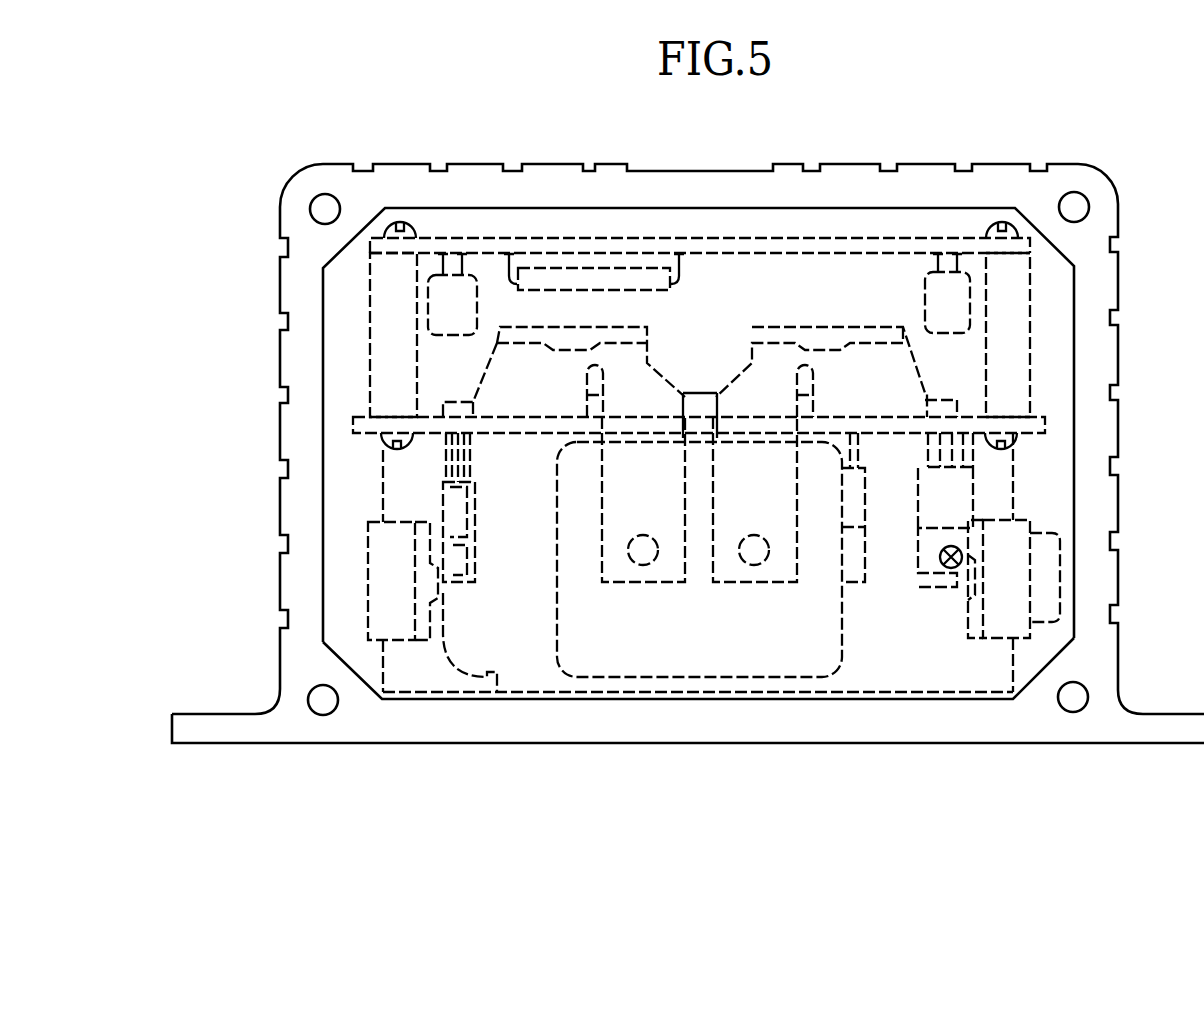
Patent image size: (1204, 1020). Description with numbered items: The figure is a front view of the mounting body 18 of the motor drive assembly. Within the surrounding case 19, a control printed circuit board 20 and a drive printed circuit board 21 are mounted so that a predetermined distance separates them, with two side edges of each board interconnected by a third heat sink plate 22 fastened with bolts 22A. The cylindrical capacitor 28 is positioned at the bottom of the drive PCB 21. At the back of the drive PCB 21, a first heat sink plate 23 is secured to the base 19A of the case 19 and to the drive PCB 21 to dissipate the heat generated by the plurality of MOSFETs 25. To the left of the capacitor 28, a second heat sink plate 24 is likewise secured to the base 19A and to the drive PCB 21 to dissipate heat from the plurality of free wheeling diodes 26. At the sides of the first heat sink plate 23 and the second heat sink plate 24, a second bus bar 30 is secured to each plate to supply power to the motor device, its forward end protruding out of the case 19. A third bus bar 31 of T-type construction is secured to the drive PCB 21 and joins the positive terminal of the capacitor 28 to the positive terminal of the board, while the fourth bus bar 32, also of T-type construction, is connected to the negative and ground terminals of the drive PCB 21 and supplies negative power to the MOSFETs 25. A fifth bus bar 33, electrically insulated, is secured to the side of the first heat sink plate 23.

The mounting body 18 is at (1136, 156).
The case 19 is at (773, 152).
The base of the case 19A is at (870, 683).
The control printed circuit board 20 is at (917, 245).
The drive printed circuit board 21 is at (997, 420).
The third heat sink plate 22 is at (380, 303).
The bolts 22A is at (394, 222).
The first heat sink plate 23 is at (908, 673).
The second heat sink plate 24 is at (403, 463).
The MOSFETs 25 is at (1045, 563).
The free wheeling diodes 26 is at (453, 498).
The cylindrical capacitor 28 is at (637, 653).
The second bus bar 30 is at (382, 572).
The third bus bar 31 is at (585, 333).
The fourth bus bar 32 is at (840, 333).
The fifth bus bar 33 is at (1015, 610).